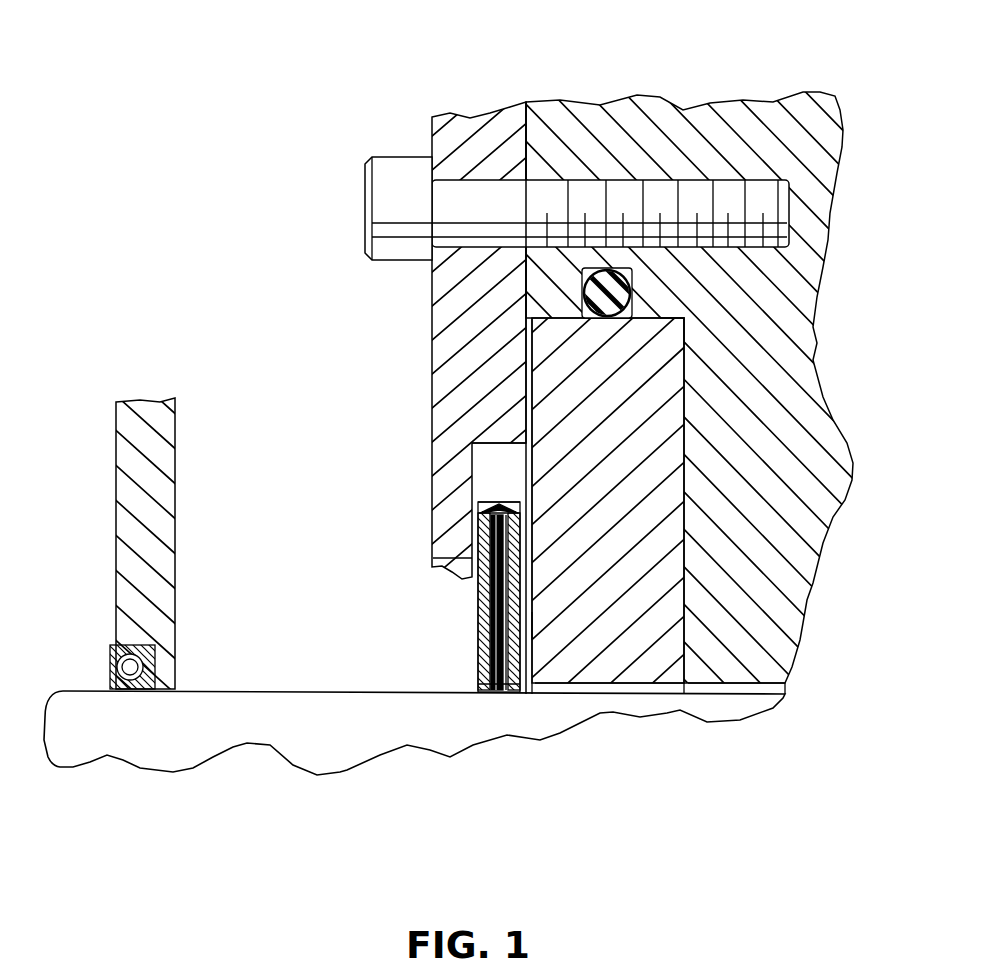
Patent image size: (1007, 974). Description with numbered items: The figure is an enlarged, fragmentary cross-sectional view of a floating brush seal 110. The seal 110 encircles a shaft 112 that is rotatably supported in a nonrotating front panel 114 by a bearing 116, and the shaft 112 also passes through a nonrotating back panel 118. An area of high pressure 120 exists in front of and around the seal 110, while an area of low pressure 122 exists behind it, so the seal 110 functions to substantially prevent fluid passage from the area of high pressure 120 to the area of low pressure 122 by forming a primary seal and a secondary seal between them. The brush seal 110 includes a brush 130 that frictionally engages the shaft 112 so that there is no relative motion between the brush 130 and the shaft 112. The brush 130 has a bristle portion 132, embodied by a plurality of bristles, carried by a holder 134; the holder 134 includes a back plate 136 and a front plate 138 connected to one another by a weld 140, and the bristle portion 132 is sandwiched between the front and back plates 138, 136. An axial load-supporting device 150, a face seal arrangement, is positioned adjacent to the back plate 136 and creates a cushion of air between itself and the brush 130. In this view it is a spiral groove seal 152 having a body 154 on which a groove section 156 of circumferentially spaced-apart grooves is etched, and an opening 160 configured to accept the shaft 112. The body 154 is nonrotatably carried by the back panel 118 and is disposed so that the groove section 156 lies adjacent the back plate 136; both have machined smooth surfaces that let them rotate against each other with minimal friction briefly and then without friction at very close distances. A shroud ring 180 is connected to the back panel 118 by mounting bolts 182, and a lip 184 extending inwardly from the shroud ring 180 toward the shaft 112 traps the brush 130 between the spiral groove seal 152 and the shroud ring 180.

The brush seal 110 is at (428, 577).
The shaft 112 is at (605, 710).
The front panel 114 is at (114, 576).
The bearing 116 is at (110, 667).
The back panel 118 is at (743, 108).
The area of high pressure 120 is at (308, 480).
The area of low pressure 122 is at (787, 688).
The brush 130 is at (415, 649).
The bristle portion 132 is at (480, 657).
The holder 134 is at (477, 688).
The back plate 136 is at (523, 615).
The front plate 138 is at (487, 602).
The weld 140 is at (494, 502).
The axial load-supporting device 150 is at (703, 420).
The spiral groove seal 152 is at (686, 368).
The body 154 is at (670, 558).
The groove section 156 is at (535, 510).
The opening 160 is at (585, 684).
The shroud ring 180 is at (452, 312).
The mounting bolts 182 is at (380, 202).
The lip 184 is at (447, 457).